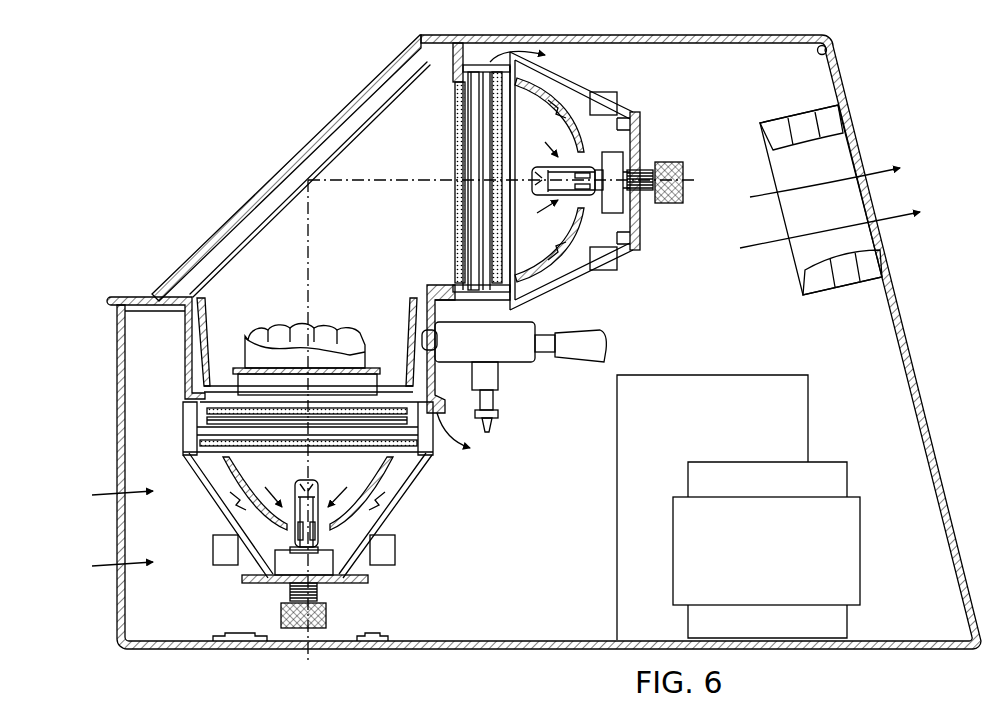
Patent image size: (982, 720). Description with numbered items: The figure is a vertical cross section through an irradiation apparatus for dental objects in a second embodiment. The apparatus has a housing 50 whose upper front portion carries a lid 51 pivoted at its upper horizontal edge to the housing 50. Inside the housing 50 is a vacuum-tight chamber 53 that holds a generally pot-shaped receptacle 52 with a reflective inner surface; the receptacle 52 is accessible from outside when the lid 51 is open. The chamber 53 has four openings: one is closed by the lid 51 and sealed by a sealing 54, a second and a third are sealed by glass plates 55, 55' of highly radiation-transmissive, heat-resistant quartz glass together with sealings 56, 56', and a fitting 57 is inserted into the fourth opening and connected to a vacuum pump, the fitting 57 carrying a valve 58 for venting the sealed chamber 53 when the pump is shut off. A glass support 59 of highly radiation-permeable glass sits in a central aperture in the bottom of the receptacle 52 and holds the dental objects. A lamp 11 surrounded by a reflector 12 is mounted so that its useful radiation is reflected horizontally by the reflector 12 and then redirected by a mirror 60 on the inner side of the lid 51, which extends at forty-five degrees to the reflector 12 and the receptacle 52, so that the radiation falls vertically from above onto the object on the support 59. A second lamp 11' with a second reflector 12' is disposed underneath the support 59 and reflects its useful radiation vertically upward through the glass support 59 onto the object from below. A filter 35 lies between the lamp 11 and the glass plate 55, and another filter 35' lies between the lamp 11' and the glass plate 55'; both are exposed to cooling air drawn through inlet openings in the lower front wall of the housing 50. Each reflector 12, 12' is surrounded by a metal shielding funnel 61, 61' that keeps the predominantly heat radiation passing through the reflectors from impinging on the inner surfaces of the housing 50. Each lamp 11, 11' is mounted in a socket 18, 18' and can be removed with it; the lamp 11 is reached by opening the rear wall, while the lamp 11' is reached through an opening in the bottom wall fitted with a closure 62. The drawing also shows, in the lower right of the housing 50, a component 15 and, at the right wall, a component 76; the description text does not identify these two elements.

The housing 50 is at (673, 36).
The lid 51 is at (282, 180).
The mirror 60 is at (333, 140).
The sealing 54 is at (152, 298).
The receptacle 52 is at (212, 330).
The vacuum-tight chamber 53 is at (345, 248).
The glass plate 55 is at (451, 178).
The filter 35 is at (446, 181).
The sealing 56 is at (449, 181).
The metal shielding funnel 61 is at (575, 181).
The reflector 12 is at (556, 169).
The lamp 11 is at (555, 159).
The socket 18 is at (639, 168).
The air outlet duct 76 is at (803, 255).
The transformer 15 is at (848, 512).
The fitting 57 is at (518, 350).
The valve 58 is at (490, 400).
The glass support 59 is at (466, 441).
The glass plate 55' is at (281, 415).
The sealing 56' is at (274, 416).
The filter 35' is at (281, 446).
The metal shielding funnel 61' is at (316, 515).
The reflector 12' is at (279, 493).
The lamp 11' is at (241, 513).
The socket 18' is at (284, 587).
The closure 62 is at (330, 643).